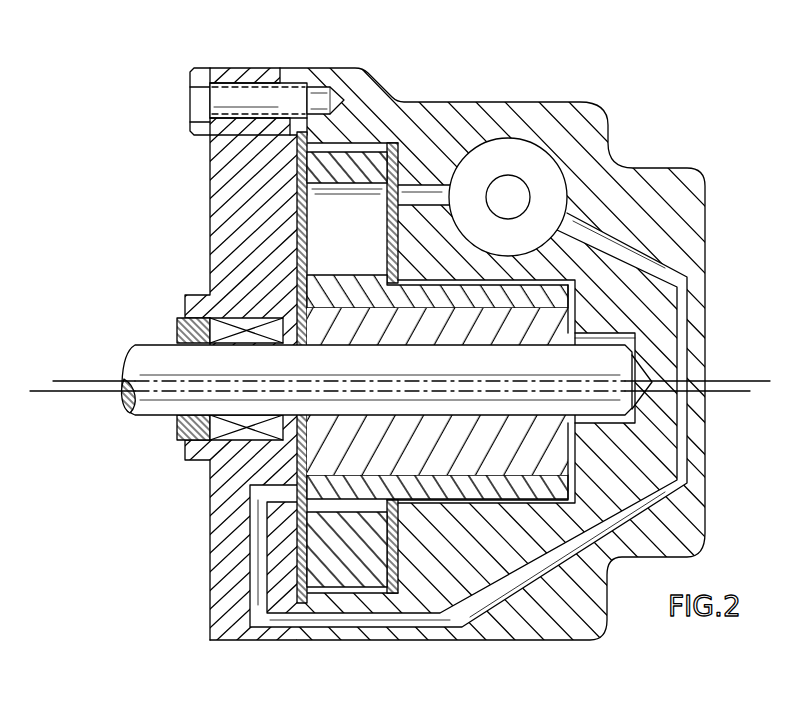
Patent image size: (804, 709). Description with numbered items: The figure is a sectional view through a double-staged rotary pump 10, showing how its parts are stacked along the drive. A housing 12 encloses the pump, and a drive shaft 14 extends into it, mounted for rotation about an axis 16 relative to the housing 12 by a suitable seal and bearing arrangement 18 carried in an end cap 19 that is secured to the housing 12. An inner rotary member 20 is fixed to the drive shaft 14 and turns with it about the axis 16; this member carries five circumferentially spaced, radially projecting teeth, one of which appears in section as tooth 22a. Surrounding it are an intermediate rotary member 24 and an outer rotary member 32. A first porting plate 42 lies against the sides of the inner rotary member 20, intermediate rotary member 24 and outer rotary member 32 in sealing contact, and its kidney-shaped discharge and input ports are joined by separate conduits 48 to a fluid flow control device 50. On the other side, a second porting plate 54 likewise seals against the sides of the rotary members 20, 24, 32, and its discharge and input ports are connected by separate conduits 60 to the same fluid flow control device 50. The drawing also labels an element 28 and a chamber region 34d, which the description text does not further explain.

The double-staged rotary pump 10 is at (640, 77).
The housing 12 is at (481, 101).
The drive shaft 14 is at (153, 362).
The axis 16 is at (87, 380).
The seal and bearing arrangement 18 is at (240, 314).
The end cap 19 is at (233, 205).
The inner rotary member 20 is at (375, 333).
The radially projecting tooth 22a is at (491, 430).
The intermediate rotary member 24 is at (362, 280).
The rotor axis 28 is at (63, 393).
The outer rotary member 32 is at (315, 163).
The pumping chamber 34d is at (333, 186).
The first porting plate 42 is at (297, 226).
The conduits 48 is at (465, 613).
The fluid flow control device 50 is at (514, 136).
The second porting plate 54 is at (409, 158).
The conduits 60 is at (420, 187).